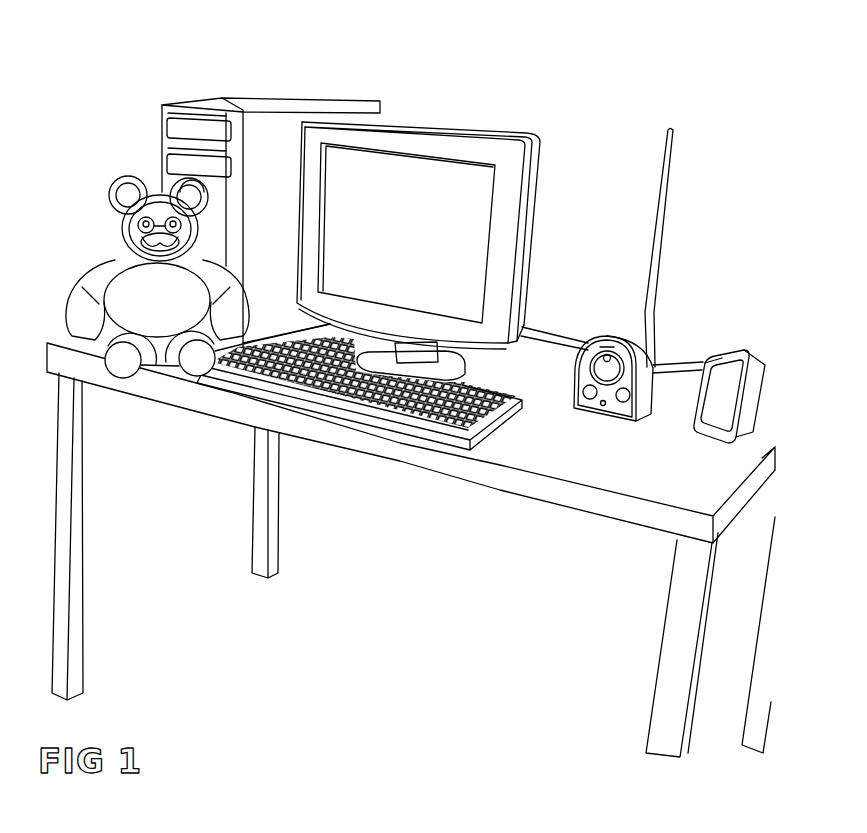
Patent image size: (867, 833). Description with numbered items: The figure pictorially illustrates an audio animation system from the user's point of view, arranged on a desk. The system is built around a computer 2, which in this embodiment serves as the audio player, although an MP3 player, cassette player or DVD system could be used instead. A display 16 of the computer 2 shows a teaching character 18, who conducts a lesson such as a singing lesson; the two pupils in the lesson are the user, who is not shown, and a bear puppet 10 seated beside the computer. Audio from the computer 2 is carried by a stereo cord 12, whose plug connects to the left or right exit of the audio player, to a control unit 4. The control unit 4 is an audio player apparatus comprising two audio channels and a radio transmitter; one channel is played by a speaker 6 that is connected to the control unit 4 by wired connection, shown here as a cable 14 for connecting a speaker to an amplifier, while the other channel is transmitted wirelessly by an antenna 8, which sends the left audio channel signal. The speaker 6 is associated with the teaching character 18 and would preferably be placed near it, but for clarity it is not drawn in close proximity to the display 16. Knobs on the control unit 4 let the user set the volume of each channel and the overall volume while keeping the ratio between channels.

The computer 2 is at (247, 107).
The control unit 4 is at (616, 335).
The speaker 6 is at (741, 348).
The antenna 8 is at (670, 163).
The bear puppet 10 is at (104, 266).
The stereo cord 12 is at (548, 325).
The cable 14 is at (678, 365).
The display 16 is at (470, 142).
The teaching figure 18 is at (405, 183).